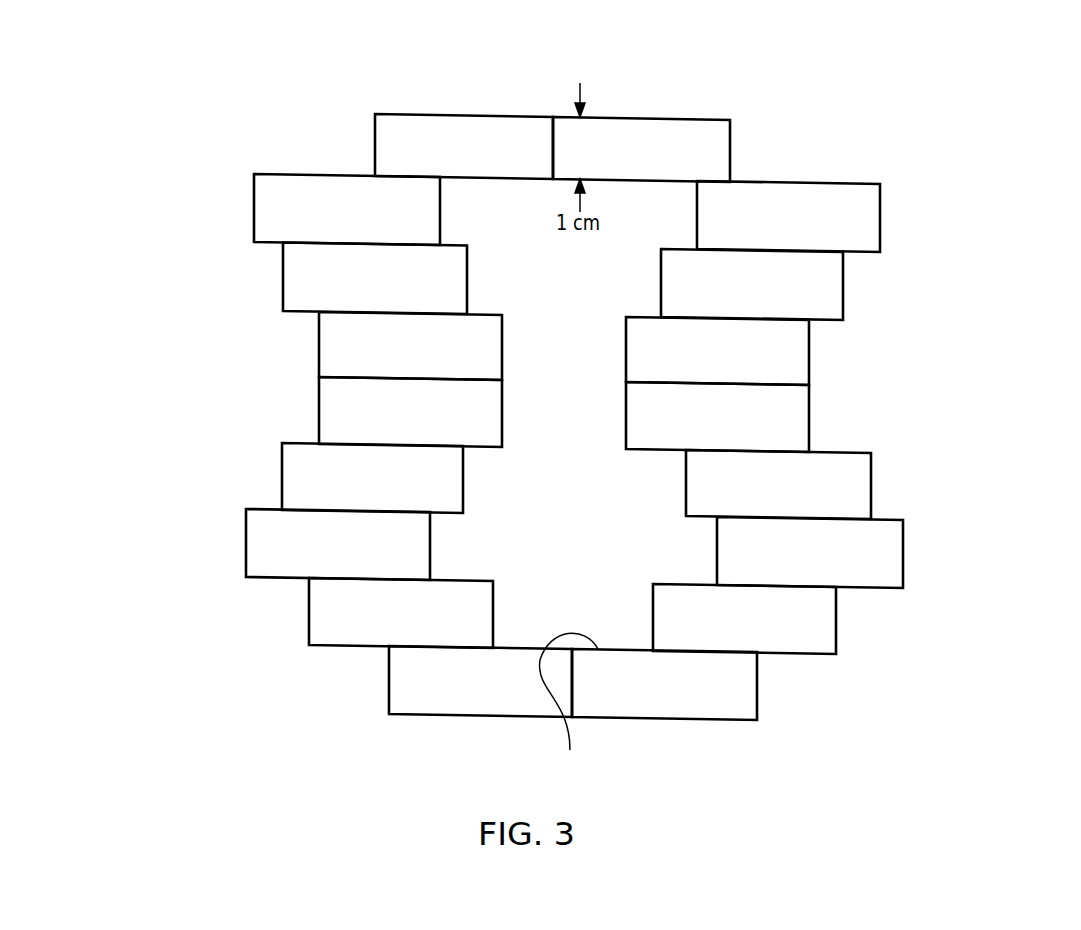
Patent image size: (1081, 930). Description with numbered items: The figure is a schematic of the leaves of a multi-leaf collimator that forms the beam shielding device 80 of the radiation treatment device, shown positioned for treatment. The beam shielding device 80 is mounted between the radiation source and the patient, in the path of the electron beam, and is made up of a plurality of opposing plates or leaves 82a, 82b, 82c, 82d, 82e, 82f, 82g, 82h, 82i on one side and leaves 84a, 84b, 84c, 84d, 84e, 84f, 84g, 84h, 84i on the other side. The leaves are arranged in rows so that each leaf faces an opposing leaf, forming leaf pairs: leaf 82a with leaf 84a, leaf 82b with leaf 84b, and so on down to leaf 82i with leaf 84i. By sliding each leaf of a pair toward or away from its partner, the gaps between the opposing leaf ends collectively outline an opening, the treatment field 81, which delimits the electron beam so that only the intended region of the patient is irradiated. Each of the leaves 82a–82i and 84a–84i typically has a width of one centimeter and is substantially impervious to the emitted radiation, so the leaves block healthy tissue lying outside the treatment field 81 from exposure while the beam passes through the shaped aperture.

The beam shielding device 80 is at (627, 47).
The treatment field 81 is at (569, 708).
The leaf 82a is at (442, 113).
The leaf 82b is at (253, 208).
The leaf 82c is at (283, 268).
The leaf 82d is at (319, 345).
The leaf 82e is at (319, 408).
The leaf 82f is at (282, 472).
The leaf 82g is at (246, 540).
The leaf 82h is at (309, 611).
The leaf 82i is at (389, 678).
The leaf 84a is at (680, 118).
The leaf 84b is at (880, 220).
The leaf 84c is at (843, 285).
The leaf 84d is at (809, 355).
The leaf 84e is at (809, 418).
The leaf 84f is at (871, 489).
The leaf 84g is at (903, 551).
The leaf 84h is at (838, 617).
The leaf 84i is at (757, 685).